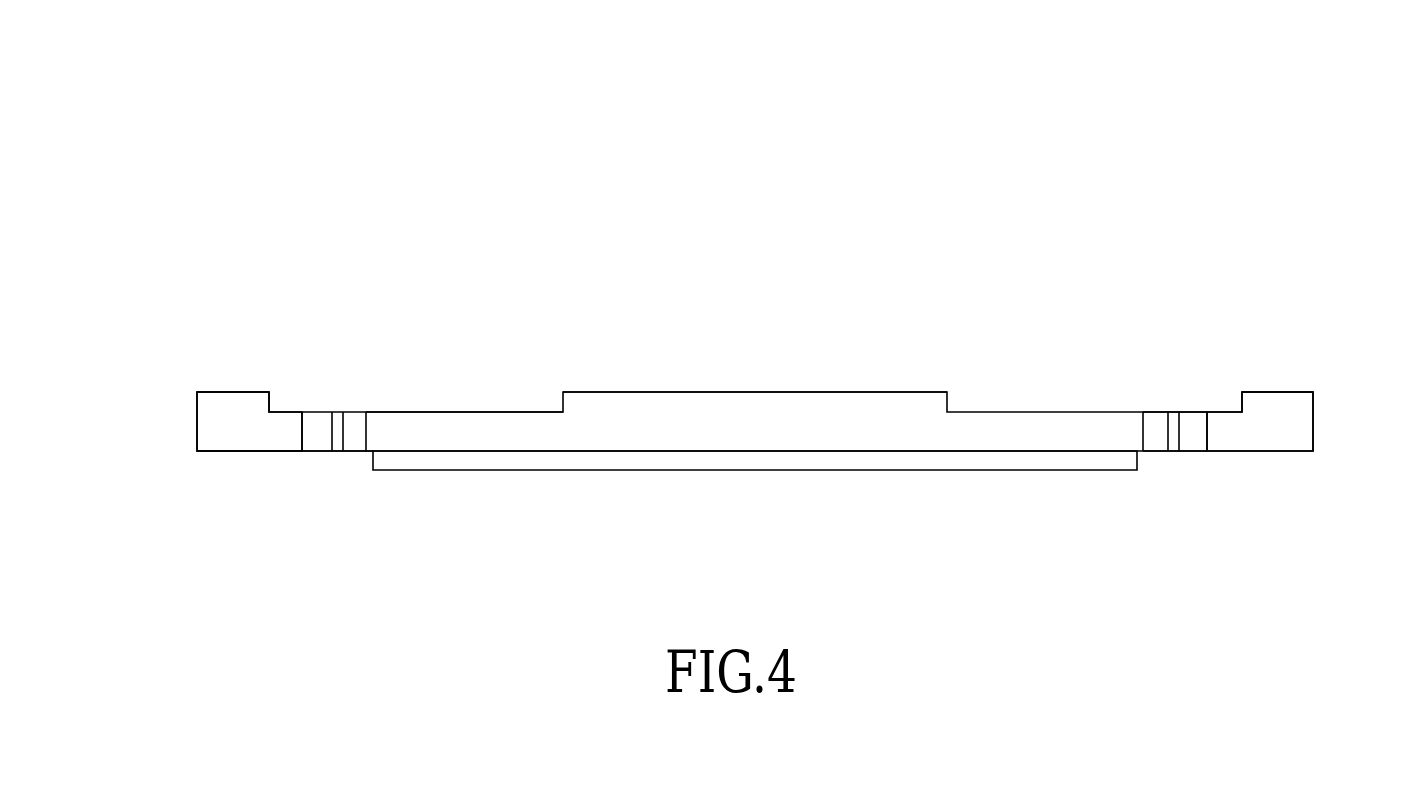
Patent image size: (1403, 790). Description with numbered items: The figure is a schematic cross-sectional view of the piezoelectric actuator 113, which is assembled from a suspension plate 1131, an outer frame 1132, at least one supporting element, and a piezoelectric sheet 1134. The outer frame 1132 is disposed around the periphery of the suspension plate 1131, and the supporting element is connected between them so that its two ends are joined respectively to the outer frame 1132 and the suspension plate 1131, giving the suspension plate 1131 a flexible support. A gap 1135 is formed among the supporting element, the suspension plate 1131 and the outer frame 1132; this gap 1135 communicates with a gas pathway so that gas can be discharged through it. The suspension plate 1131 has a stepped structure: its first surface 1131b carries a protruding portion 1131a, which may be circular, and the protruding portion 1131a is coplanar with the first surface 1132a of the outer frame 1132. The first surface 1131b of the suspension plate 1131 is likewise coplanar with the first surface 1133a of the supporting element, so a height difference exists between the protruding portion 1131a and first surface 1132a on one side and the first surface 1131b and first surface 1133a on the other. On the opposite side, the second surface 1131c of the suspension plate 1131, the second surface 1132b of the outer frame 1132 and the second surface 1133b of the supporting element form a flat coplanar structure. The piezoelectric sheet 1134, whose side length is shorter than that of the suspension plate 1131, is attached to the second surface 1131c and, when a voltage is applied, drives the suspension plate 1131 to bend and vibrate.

The piezoelectric actuator 113 is at (1287, 192).
The suspension plate 1131 is at (967, 433).
The protruding portion 1131a is at (780, 373).
The first surface of the suspension plate 1131b is at (426, 410).
The second surface of the suspension plate 1131c is at (473, 448).
The outer frame 1132 is at (252, 413).
The first surface of the outer frame 1132a is at (222, 392).
The second surface of the outer frame 1132b is at (240, 451).
The first surface of the supporting element 1133a is at (1173, 410).
The second surface of the supporting element 1133b is at (1175, 452).
The piezoelectric sheet 1134 is at (753, 462).
The gap 1135 is at (363, 395).